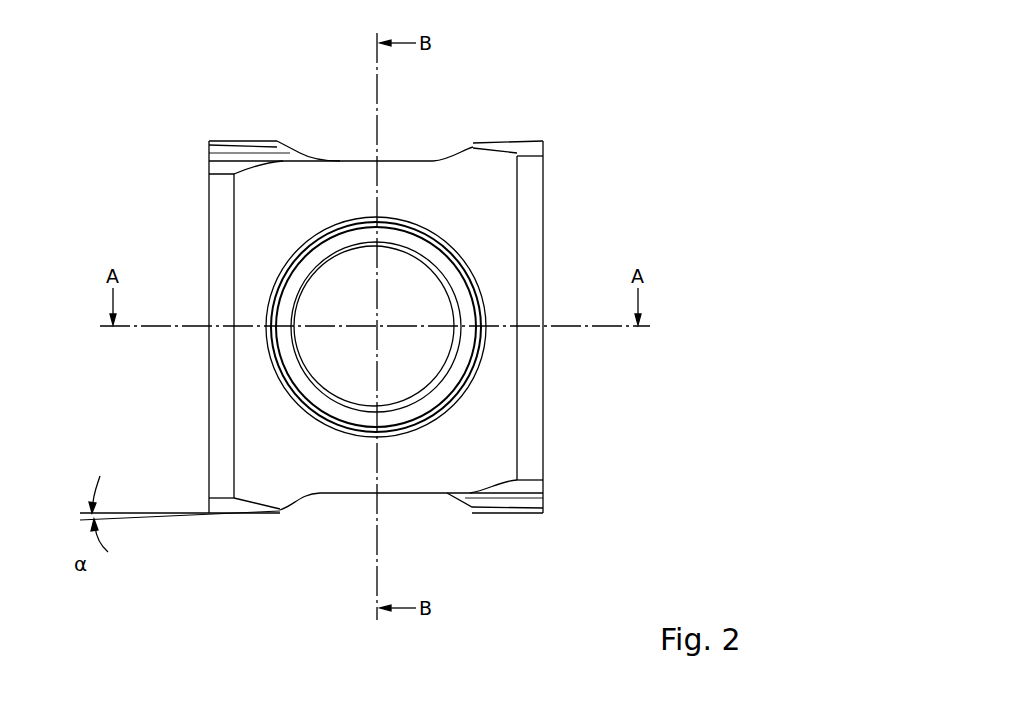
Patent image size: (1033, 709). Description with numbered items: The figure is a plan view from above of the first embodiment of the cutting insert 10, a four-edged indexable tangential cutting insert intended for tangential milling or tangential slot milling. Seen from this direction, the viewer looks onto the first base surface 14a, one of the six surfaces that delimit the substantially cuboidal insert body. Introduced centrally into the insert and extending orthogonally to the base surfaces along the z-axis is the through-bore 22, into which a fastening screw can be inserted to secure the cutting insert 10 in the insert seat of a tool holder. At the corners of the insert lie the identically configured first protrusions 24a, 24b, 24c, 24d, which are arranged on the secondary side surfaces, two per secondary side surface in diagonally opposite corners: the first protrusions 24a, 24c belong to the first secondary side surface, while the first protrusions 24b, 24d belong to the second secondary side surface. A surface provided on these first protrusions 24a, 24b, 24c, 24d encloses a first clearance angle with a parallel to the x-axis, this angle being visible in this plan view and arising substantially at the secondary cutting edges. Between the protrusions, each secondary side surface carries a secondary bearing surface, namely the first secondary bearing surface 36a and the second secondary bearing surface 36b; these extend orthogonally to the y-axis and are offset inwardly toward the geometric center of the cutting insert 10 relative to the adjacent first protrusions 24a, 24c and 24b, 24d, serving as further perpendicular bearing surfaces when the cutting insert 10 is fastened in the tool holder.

The cutting insert 10 is at (638, 133).
The first base surface 14a is at (436, 182).
The through-bore 22 is at (408, 367).
The first protrusion 24a is at (227, 505).
The first protrusion 24b is at (219, 146).
The first protrusion 24c is at (508, 498).
The first protrusion 24d is at (526, 150).
The first secondary bearing surface 36a is at (405, 497).
The second secondary bearing surface 36b is at (333, 147).